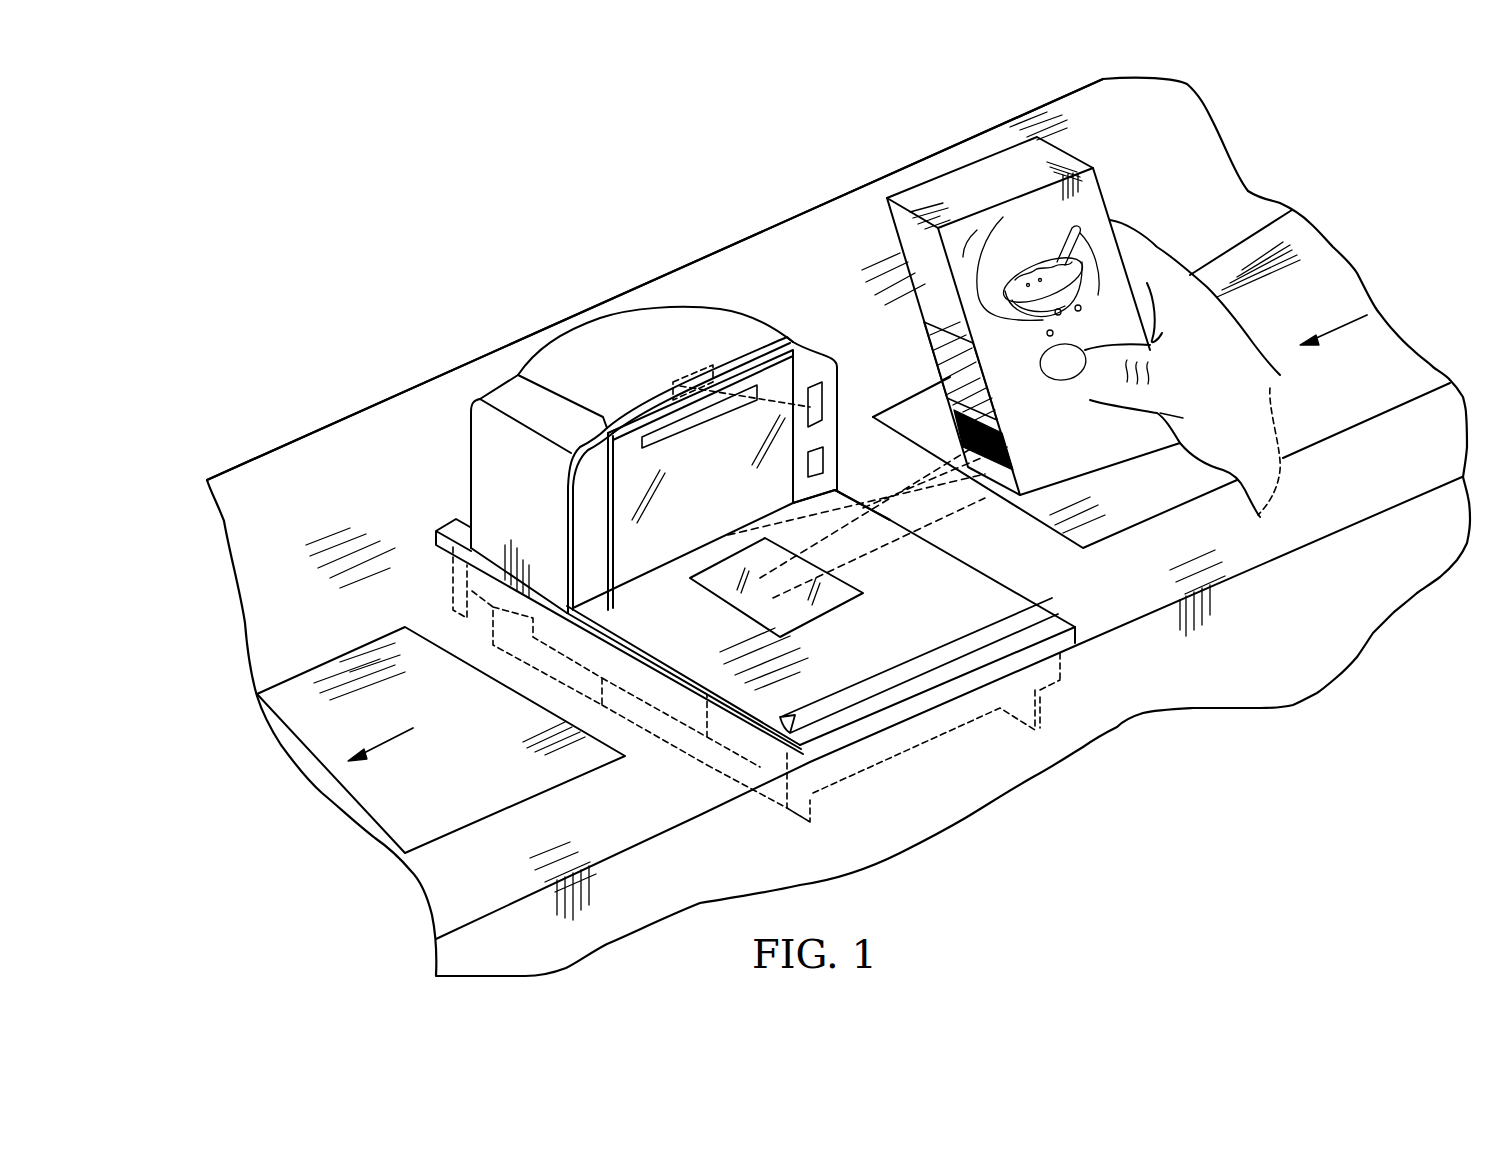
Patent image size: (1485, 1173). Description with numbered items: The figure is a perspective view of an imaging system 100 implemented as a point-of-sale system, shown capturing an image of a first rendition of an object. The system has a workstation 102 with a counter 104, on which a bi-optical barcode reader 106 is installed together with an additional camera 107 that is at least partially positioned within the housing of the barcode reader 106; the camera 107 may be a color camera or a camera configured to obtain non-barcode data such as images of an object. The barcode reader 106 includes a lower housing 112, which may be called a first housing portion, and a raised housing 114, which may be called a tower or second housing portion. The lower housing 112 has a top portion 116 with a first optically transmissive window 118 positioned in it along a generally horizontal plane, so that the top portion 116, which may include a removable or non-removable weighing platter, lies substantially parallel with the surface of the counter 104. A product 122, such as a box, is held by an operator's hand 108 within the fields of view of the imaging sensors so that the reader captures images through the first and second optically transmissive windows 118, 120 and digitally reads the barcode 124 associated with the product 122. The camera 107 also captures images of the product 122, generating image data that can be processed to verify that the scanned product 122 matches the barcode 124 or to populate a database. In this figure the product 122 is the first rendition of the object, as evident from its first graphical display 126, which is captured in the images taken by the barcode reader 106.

The imaging system 100 is at (179, 287).
The workstation 102 is at (751, 218).
The counter 104 is at (1190, 157).
The bi-optical barcode reader 106 is at (483, 490).
The camera 107 is at (683, 367).
The hand of operator 108 is at (1247, 367).
The lower housing 112 is at (770, 821).
The raised housing 114 is at (644, 451).
The top portion 116 is at (763, 697).
The first optically transmissive window 118 is at (818, 604).
The second optically transmissive window 120 is at (633, 413).
The product 122 is at (1031, 316).
The barcode 124 is at (1013, 455).
The first graphical display 126 is at (932, 347).